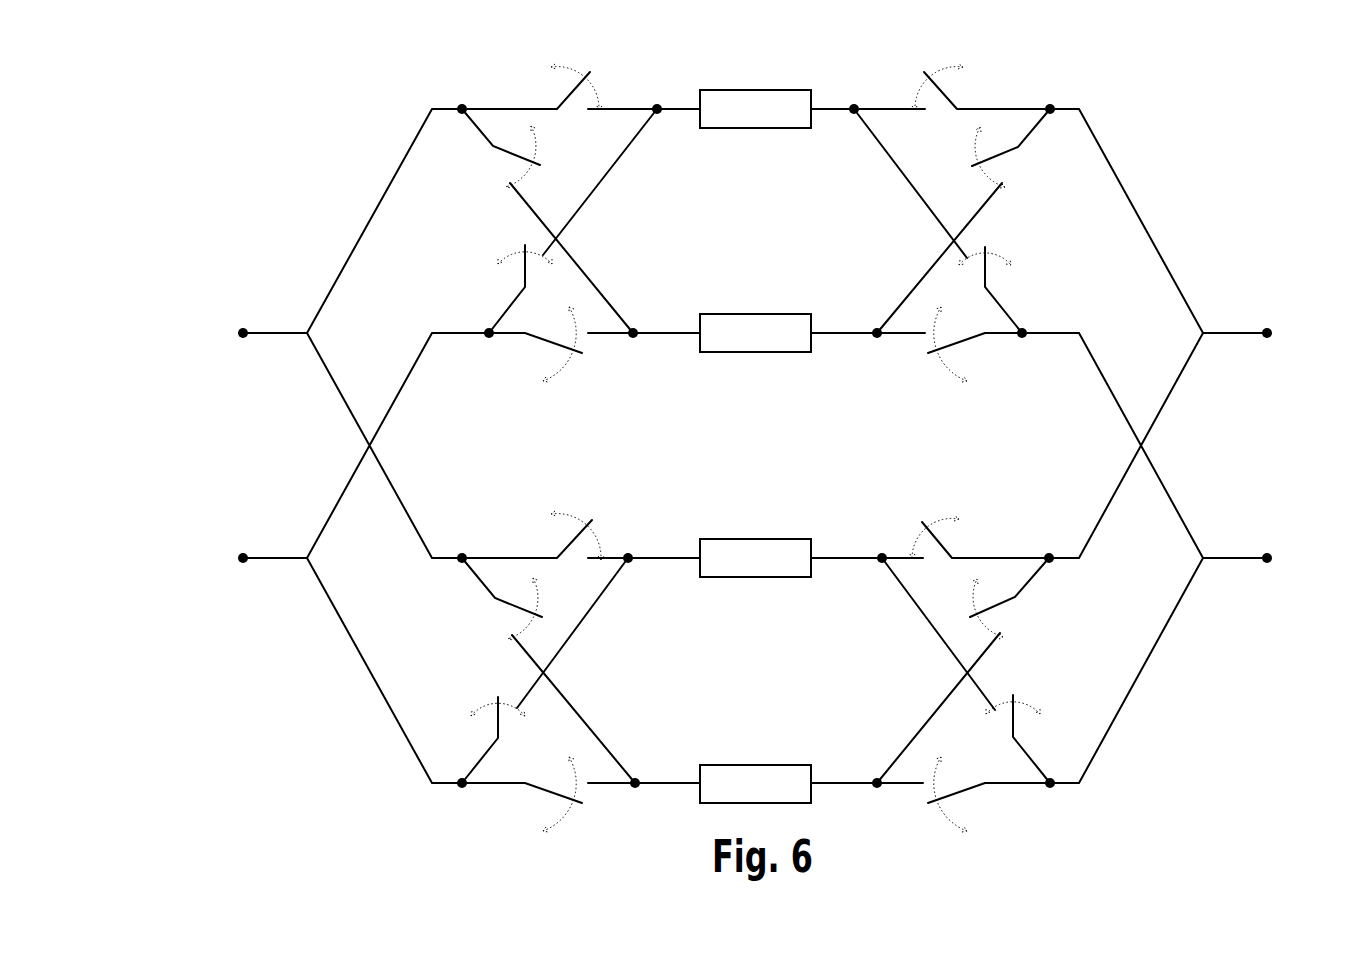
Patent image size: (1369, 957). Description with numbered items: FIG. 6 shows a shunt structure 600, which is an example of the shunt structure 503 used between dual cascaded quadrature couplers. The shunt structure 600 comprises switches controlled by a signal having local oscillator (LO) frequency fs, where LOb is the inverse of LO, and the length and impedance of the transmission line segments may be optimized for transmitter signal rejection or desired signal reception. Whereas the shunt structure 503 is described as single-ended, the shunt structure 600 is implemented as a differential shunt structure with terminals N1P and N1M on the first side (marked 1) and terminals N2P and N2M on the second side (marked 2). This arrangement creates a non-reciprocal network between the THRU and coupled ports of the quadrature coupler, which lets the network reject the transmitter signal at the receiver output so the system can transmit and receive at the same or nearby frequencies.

The shunt structure 600 is at (185, 128).
The shunt structure 503 is at (723, 445).
The input ports N1P/N1M with connecting branches 1 is at (339, 446).
The output ports N2P/N2M with connecting branches 2 is at (1177, 446).